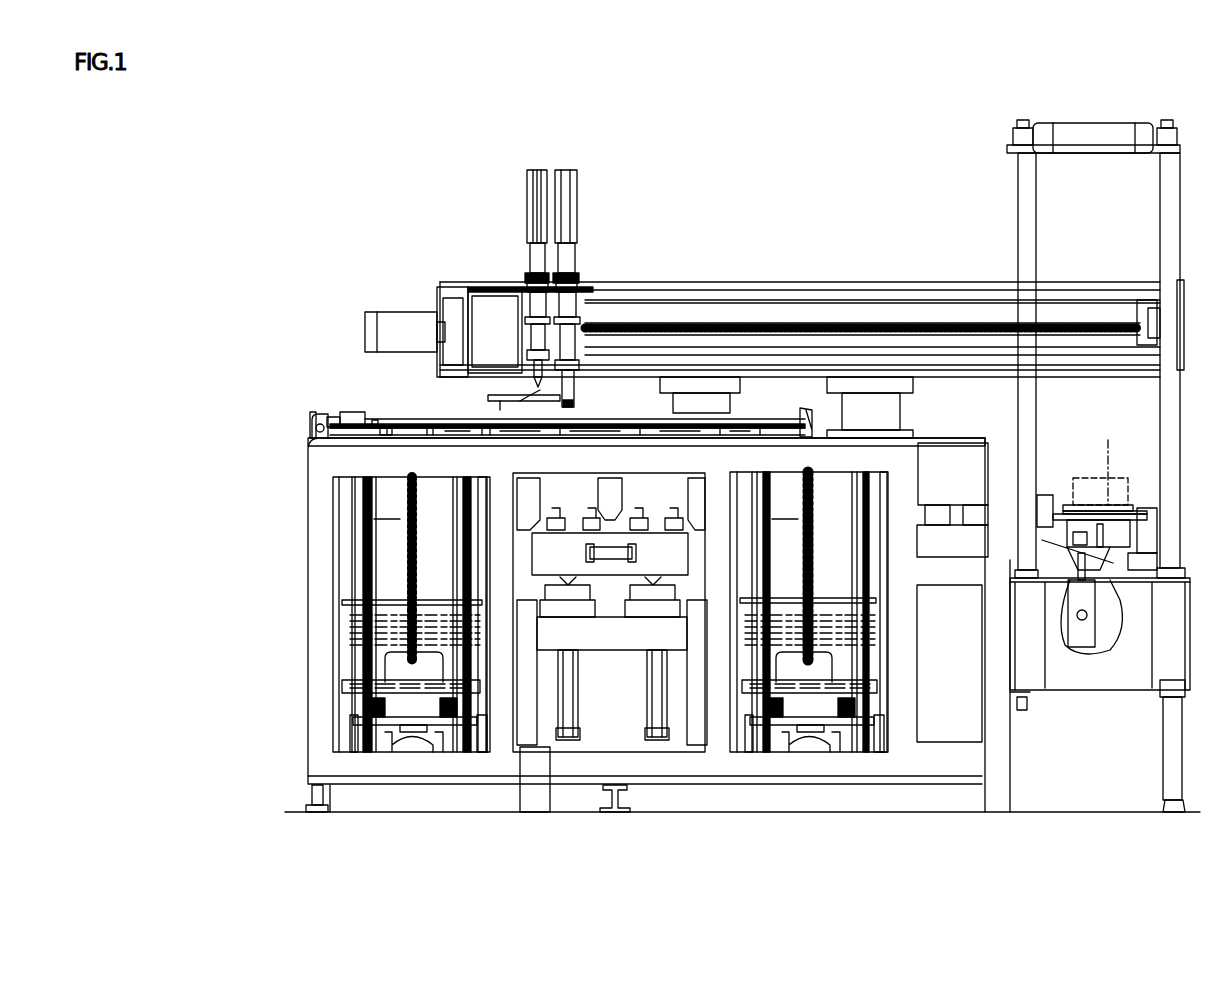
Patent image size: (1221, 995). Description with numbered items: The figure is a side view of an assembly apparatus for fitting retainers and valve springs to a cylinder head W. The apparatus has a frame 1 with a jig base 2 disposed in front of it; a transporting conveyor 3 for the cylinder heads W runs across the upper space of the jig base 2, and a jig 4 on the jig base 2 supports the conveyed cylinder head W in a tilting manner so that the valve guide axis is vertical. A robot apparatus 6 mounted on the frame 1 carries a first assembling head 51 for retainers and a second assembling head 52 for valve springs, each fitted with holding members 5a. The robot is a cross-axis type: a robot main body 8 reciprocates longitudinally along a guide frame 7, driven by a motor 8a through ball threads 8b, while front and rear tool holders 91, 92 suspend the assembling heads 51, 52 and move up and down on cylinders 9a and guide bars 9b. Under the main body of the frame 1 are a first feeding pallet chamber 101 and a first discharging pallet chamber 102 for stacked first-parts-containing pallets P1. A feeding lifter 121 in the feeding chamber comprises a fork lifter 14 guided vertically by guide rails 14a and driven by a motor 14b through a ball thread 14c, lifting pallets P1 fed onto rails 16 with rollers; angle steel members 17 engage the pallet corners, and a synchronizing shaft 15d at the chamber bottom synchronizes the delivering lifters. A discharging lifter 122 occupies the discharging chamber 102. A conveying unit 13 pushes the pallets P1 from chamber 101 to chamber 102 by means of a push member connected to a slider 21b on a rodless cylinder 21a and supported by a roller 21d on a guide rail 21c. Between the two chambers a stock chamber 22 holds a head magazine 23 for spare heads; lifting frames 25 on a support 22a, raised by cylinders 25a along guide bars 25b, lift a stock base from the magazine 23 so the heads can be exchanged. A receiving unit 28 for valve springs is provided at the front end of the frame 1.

The frame 1 is at (306, 448).
The jig base 2 is at (1178, 590).
The transporting conveyor 3 is at (1152, 512).
The jig 4 is at (1135, 500).
The holding members 5a is at (500, 398).
The first assembling head 51 is at (578, 383).
The second assembling head 52 is at (528, 356).
The robot apparatus 6 is at (585, 265).
The guide frame 7 is at (770, 283).
The robot main body 8 is at (508, 289).
The motor 8a is at (402, 311).
The ball threads 8b is at (862, 320).
The cylinders 9a is at (560, 170).
The guide bars 9b is at (540, 200).
The first tool holder 91 is at (578, 322).
The second tool holder 92 is at (526, 311).
The first feeding pallet chamber 101 is at (389, 506).
The first discharging pallet chamber 102 is at (787, 506).
The feeding lifter 121 is at (342, 559).
The discharging lifter 122 is at (887, 483).
The conveying unit 13 is at (327, 408).
The fork lifter 14 is at (390, 670).
The guide rails 14a is at (400, 600).
The motor 14b is at (410, 747).
The ball thread 14c is at (407, 540).
The synchronizing shaft 15d is at (380, 748).
The rails with rollers 16 is at (360, 708).
The angle steel members 17 is at (345, 495).
The rodless cylinder 21a is at (398, 420).
The slider 21b is at (352, 412).
The guide rail 21c is at (372, 424).
The roller 21d is at (312, 434).
The stock chamber 22 is at (644, 492).
The support 22a is at (530, 640).
The head magazine 23 is at (567, 538).
The lifting frames 25 is at (635, 620).
The cylinders 25a is at (643, 690).
The guide bars 25b is at (568, 738).
The receiving unit 28 is at (978, 455).
The first-parts-containing pallets P1 is at (400, 613).
The cylinder head W is at (1105, 466).